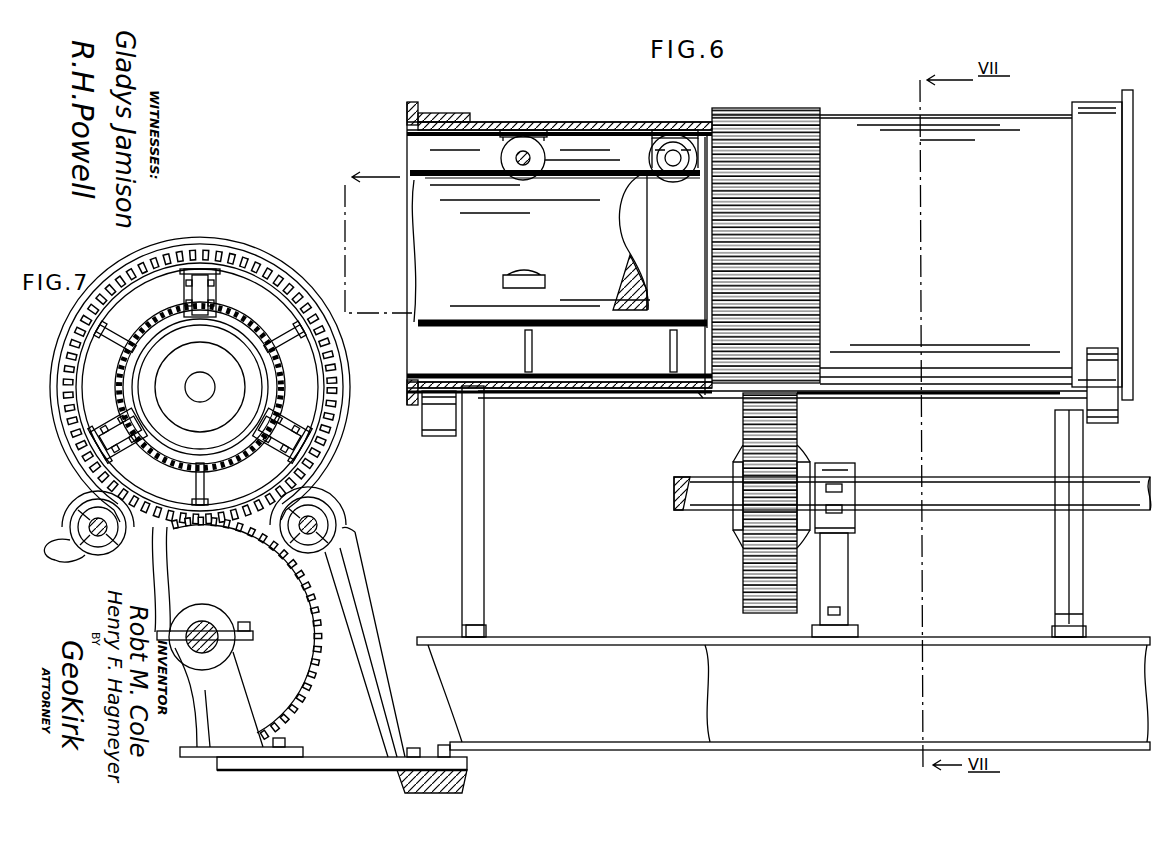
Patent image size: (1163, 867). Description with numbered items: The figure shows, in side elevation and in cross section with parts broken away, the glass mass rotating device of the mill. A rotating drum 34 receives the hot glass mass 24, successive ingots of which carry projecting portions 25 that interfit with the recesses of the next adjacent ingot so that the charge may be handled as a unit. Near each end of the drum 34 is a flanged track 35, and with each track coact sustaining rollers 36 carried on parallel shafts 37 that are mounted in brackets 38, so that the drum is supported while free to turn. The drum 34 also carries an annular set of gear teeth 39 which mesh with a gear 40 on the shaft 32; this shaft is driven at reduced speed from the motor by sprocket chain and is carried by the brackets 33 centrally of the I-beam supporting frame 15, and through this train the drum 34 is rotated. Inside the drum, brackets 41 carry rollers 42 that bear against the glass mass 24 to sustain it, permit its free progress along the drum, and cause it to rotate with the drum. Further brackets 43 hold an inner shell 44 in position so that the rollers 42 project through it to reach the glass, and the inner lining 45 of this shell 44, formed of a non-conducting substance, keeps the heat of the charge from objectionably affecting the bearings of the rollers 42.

In FIG. 6, the I-beam supporting frame 15 is at (548, 640).
In FIG. 7, the I-beam supporting frame 15 is at (397, 773).
In FIG. 6, the hot glass mass 24 is at (637, 168).
In FIG. 7, the hot glass mass 24 is at (130, 370).
In FIG. 7, the projecting portion 25 is at (157, 393).
In FIG. 6, the shaft 32 is at (715, 511).
In FIG. 7, the shaft 32 is at (208, 627).
In FIG. 6, the bracket 33 is at (843, 578).
In FIG. 7, the bracket 33 is at (243, 680).
In FIG. 6, the drum 34 is at (598, 120).
In FIG. 6, the flanged track 35 is at (433, 113).
In FIG. 7, the flanged track 35 is at (212, 237).
In FIG. 6, the sustaining roller 36 is at (437, 438).
In FIG. 7, the sustaining roller 36 is at (340, 512).
In FIG. 6, the shaft 37 is at (549, 398).
In FIG. 7, the shaft 37 is at (73, 510).
In FIG. 6, the bracket 38 is at (488, 466).
In FIG. 7, the bracket 38 is at (50, 528).
In FIG. 6, the annular set of gear teeth 39 is at (790, 108).
In FIG. 7, the annular set of gear teeth 39 is at (330, 433).
In FIG. 6, the gear 40 is at (743, 593).
In FIG. 7, the gear 40 is at (307, 693).
In FIG. 6, the bracket 41 is at (547, 130).
In FIG. 7, the bracket 41 is at (225, 288).
In FIG. 6, the roller 42 is at (513, 137).
In FIG. 7, the roller 42 is at (217, 282).
In FIG. 6, the bracket 43 is at (667, 352).
In FIG. 7, the bracket 43 is at (100, 340).
In FIG. 6, the inner shell 44 is at (458, 330).
In FIG. 7, the inner shell 44 is at (283, 355).
In FIG. 6, the inner lining 45 is at (430, 178).
In FIG. 7, the inner lining 45 is at (283, 370).